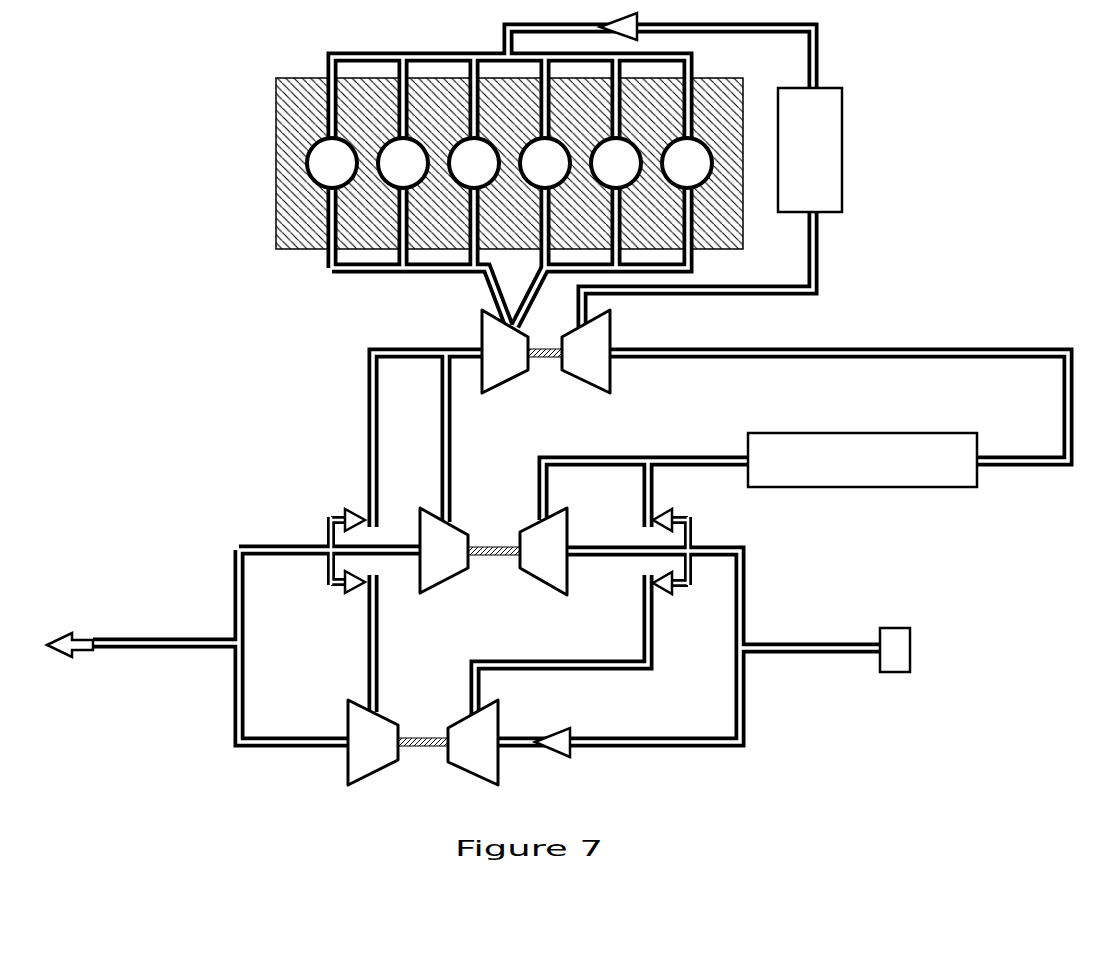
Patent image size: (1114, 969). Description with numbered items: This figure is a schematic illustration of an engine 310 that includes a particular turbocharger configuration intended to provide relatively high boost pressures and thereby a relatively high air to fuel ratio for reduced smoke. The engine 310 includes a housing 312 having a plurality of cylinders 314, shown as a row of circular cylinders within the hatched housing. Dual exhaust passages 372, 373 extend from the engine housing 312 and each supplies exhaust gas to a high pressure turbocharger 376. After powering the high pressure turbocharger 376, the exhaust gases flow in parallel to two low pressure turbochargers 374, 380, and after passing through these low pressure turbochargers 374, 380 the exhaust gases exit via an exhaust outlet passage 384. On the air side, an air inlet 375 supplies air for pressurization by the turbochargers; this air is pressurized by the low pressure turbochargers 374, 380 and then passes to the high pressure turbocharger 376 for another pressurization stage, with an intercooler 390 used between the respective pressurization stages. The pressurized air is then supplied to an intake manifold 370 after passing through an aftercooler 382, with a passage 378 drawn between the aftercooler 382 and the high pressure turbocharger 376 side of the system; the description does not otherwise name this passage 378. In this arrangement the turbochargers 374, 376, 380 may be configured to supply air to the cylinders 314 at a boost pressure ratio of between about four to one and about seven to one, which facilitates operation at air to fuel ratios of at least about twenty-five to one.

The engine 310 is at (128, 183).
The housing 312 is at (276, 238).
The cylinders 314 is at (322, 166).
The intake manifold 370 is at (471, 50).
The exhaust passage 372 is at (495, 292).
The exhaust passage 373 is at (530, 288).
The low pressure turbocharger 374 is at (455, 586).
The air inlet 375 is at (910, 672).
The high pressure turbocharger 376 is at (513, 390).
The EGR passage 378 is at (818, 272).
The low pressure turbocharger 380 is at (386, 781).
The aftercooler 382 is at (843, 115).
The exhaust outlet passage 384 is at (133, 652).
The intercooler 390 is at (977, 489).